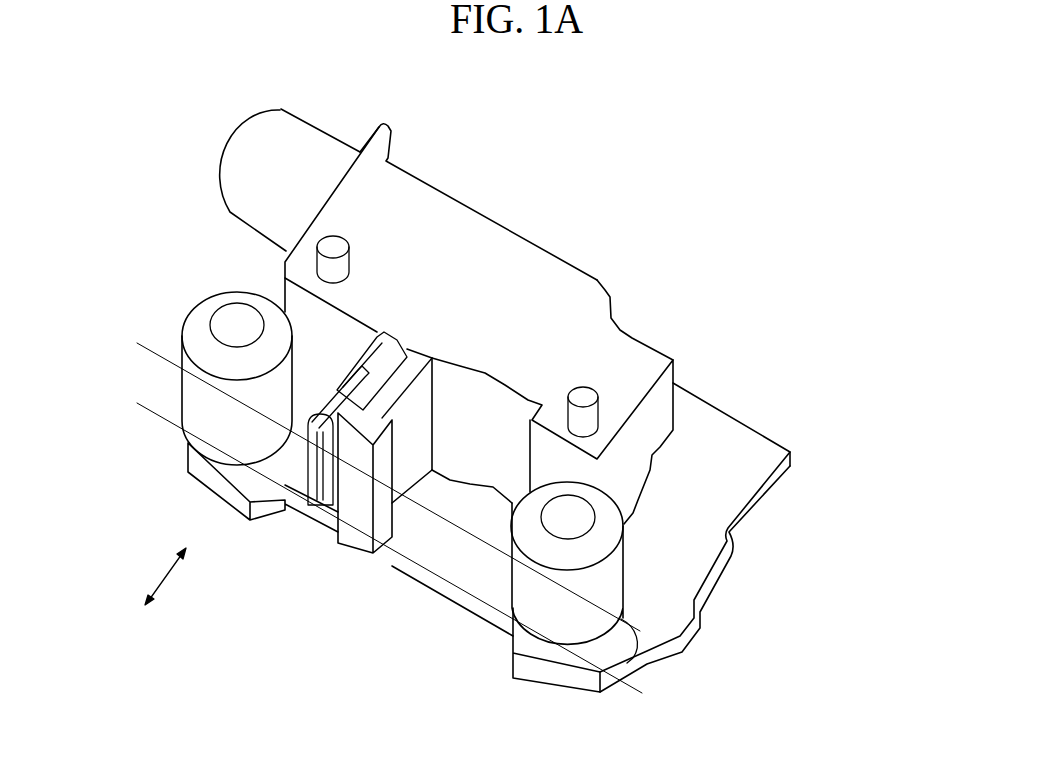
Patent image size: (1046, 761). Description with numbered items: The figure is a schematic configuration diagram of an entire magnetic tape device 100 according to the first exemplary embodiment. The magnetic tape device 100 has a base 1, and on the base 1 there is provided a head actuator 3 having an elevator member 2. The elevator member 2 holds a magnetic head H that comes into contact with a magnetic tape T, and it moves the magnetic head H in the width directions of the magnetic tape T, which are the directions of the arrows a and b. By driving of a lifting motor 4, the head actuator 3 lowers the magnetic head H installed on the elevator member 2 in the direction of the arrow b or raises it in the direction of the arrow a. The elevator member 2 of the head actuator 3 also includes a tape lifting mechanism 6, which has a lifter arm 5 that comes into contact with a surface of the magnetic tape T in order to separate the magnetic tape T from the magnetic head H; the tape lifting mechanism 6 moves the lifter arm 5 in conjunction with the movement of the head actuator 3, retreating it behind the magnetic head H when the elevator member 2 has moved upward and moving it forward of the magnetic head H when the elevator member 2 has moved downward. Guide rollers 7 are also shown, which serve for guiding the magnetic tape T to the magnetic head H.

The magnetic tape device 100 is at (590, 152).
The base 1 is at (760, 447).
The elevator member 2 is at (595, 300).
The head actuator 3 is at (445, 172).
The lifting motor 4 is at (236, 184).
The lifter arm 5 is at (315, 510).
The tape lifting mechanism 6 is at (302, 478).
The guide rollers 7 is at (190, 396).
The magnetic head H is at (357, 522).
The magnetic tape T is at (428, 572).
The arrow a is at (453, 372).
The arrow b is at (453, 372).